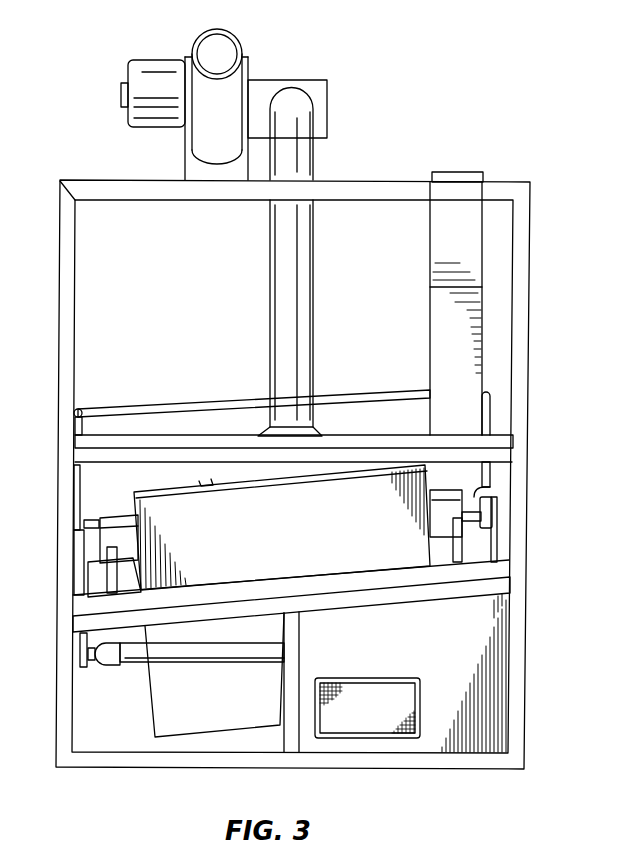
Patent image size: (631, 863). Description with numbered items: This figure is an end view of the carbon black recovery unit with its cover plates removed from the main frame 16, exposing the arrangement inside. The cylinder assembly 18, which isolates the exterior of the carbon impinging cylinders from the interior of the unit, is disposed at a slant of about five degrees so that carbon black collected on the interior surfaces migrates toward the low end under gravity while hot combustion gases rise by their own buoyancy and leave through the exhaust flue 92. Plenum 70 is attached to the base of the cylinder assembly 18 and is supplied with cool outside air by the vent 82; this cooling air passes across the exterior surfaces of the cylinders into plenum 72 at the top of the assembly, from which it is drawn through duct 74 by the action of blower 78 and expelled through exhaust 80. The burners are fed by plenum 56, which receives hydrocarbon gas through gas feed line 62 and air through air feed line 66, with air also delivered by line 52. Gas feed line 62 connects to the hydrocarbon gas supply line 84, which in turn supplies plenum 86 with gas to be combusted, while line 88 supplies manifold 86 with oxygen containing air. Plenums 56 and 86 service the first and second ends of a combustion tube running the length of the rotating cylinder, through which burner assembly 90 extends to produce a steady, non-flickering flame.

The main frame 16 is at (363, 190).
The cylinder assembly 18 is at (285, 549).
The air line 52 is at (142, 653).
The plenum 56 is at (74, 545).
The gas feed line 62 is at (74, 481).
The air feed line 66 is at (80, 637).
The plenum 70 is at (218, 705).
The plenum 72 is at (204, 483).
The duct 74 is at (277, 310).
The blower 78 is at (150, 88).
The exhaust 80 is at (226, 48).
The vent 82 is at (378, 717).
The hydrocarbon gas supply line 84 is at (158, 408).
The plenum 86 is at (495, 510).
The air line 88 is at (493, 540).
The burner assembly 90 is at (97, 568).
The exhaust flue 92 is at (482, 172).